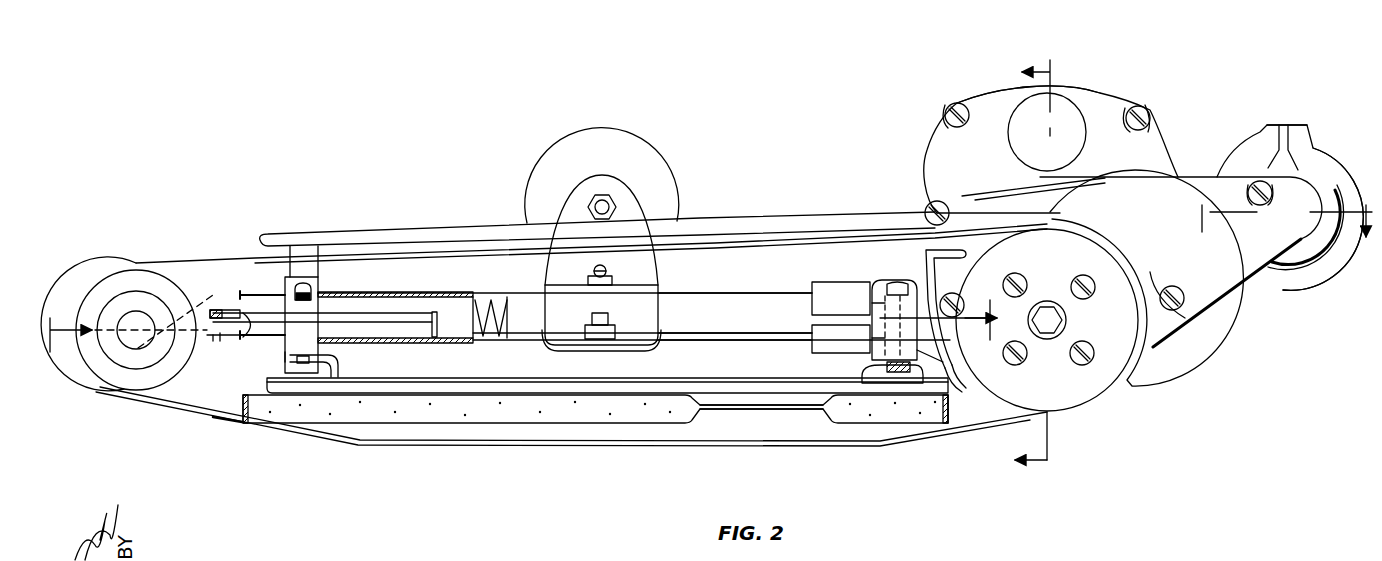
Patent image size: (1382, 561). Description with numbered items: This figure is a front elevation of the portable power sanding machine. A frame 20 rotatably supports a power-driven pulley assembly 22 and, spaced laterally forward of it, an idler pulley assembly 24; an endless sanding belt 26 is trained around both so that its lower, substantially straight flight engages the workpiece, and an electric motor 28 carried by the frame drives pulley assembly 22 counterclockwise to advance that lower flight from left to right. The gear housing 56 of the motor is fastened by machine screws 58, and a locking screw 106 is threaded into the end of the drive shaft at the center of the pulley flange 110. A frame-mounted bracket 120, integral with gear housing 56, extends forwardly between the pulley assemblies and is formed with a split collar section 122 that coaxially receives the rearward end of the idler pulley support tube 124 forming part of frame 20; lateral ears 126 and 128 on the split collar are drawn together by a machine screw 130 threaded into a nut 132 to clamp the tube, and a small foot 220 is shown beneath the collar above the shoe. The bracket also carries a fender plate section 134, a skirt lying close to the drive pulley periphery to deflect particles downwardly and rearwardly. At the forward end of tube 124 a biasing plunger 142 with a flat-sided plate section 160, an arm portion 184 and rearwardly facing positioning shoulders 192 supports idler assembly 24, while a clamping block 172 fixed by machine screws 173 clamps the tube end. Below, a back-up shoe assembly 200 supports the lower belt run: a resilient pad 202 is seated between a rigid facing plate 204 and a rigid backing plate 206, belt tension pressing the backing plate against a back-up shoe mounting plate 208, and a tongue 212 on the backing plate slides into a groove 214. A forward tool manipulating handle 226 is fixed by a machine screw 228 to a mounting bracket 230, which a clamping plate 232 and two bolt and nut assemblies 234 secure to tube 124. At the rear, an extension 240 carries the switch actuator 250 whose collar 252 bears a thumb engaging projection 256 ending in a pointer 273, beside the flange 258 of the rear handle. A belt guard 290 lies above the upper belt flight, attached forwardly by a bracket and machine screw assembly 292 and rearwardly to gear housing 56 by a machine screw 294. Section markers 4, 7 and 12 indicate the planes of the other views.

The section line 4- 4 is at (1043, 267).
The section line 7- 7 is at (520, 322).
The section line 12- 12 is at (1286, 221).
The frame 20 is at (714, 290).
The power-driven pulley assembly 22 is at (1112, 248).
The idler pulley assembly 24 is at (94, 276).
The sanding belt 26 is at (200, 262).
The electric motor 28 is at (1112, 86).
The gear housing 56 is at (990, 100).
The machine screws 58 is at (963, 128).
The locking screw 106 is at (1062, 315).
The pulley flange 110 is at (1068, 412).
The frame-mounted bracket 120 is at (915, 278).
The split collar section 122 is at (822, 290).
The idler pulley support tube 124 is at (750, 342).
The lateral ear 126 is at (872, 303).
The lateral ear 128 is at (872, 338).
The machine screw 130 is at (884, 326).
The nut 132 is at (878, 294).
The fender plate section 134 is at (967, 391).
The biasing plunger 142 is at (218, 348).
The plate section 160 is at (268, 285).
The clamping block 172 is at (400, 295).
The machine screws 173 is at (318, 307).
The arm portion 184 is at (312, 272).
The positioning shoulders 192 is at (242, 298).
The back-up shoe assembly 200 is at (652, 380).
The resilient pad 202 is at (545, 410).
The facing plate 204 is at (764, 430).
The backing plate 206 is at (764, 403).
The back-up shoe mounting plate 208 is at (925, 388).
The tongue 212 is at (340, 366).
The groove 214 is at (300, 365).
The foot 220 is at (866, 370).
The forward tool manipulating handle 226 is at (660, 155).
The machine screw 228 is at (618, 205).
The mounting bracket 230 is at (655, 268).
The clamping plate 232 is at (556, 348).
The bolt and nut assemblies 234 is at (606, 287).
The extension 240 is at (1192, 175).
The switch actuator 250 is at (1311, 143).
The collar 252 is at (1320, 270).
The thumb engaging projection 256 is at (1268, 125).
The flange 258 is at (1348, 170).
The pointer 273 is at (1290, 128).
The belt guard 290 is at (414, 229).
The bracket and machine screw assembly 292 is at (322, 258).
The machine screw 294 is at (1202, 310).